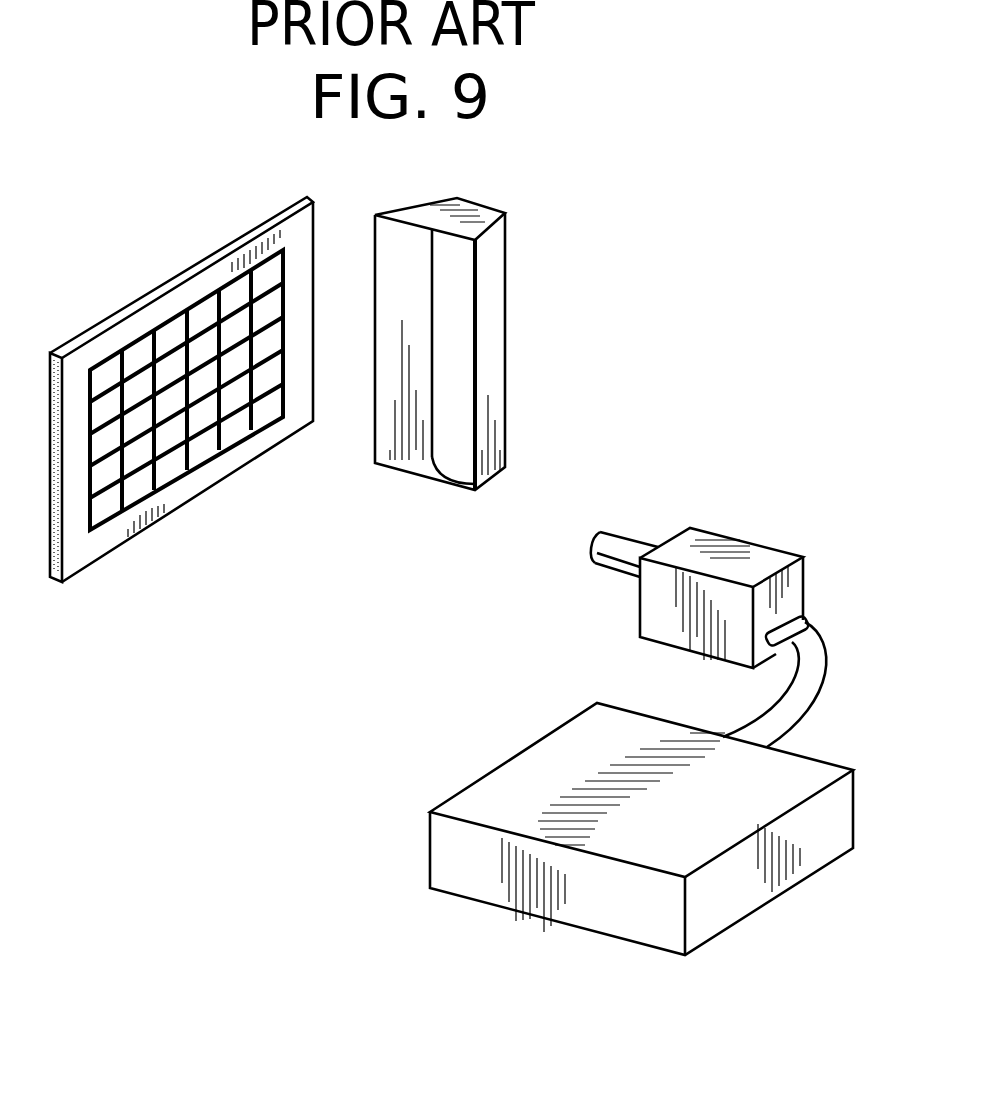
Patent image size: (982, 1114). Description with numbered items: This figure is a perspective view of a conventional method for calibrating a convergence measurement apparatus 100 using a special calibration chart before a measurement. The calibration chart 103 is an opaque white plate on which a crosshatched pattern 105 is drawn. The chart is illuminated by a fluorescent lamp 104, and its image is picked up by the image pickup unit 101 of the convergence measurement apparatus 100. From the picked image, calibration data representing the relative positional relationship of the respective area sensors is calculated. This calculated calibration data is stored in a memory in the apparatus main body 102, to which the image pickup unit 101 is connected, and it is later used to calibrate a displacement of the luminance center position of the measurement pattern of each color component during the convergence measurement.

The convergence measurement apparatus 100 is at (590, 638).
The image pickup unit 101 is at (720, 537).
The apparatus main body 102 is at (483, 777).
The calibration chart 103 is at (85, 618).
The fluorescent lamp 104 is at (498, 310).
The crosshatched pattern 105 is at (165, 320).